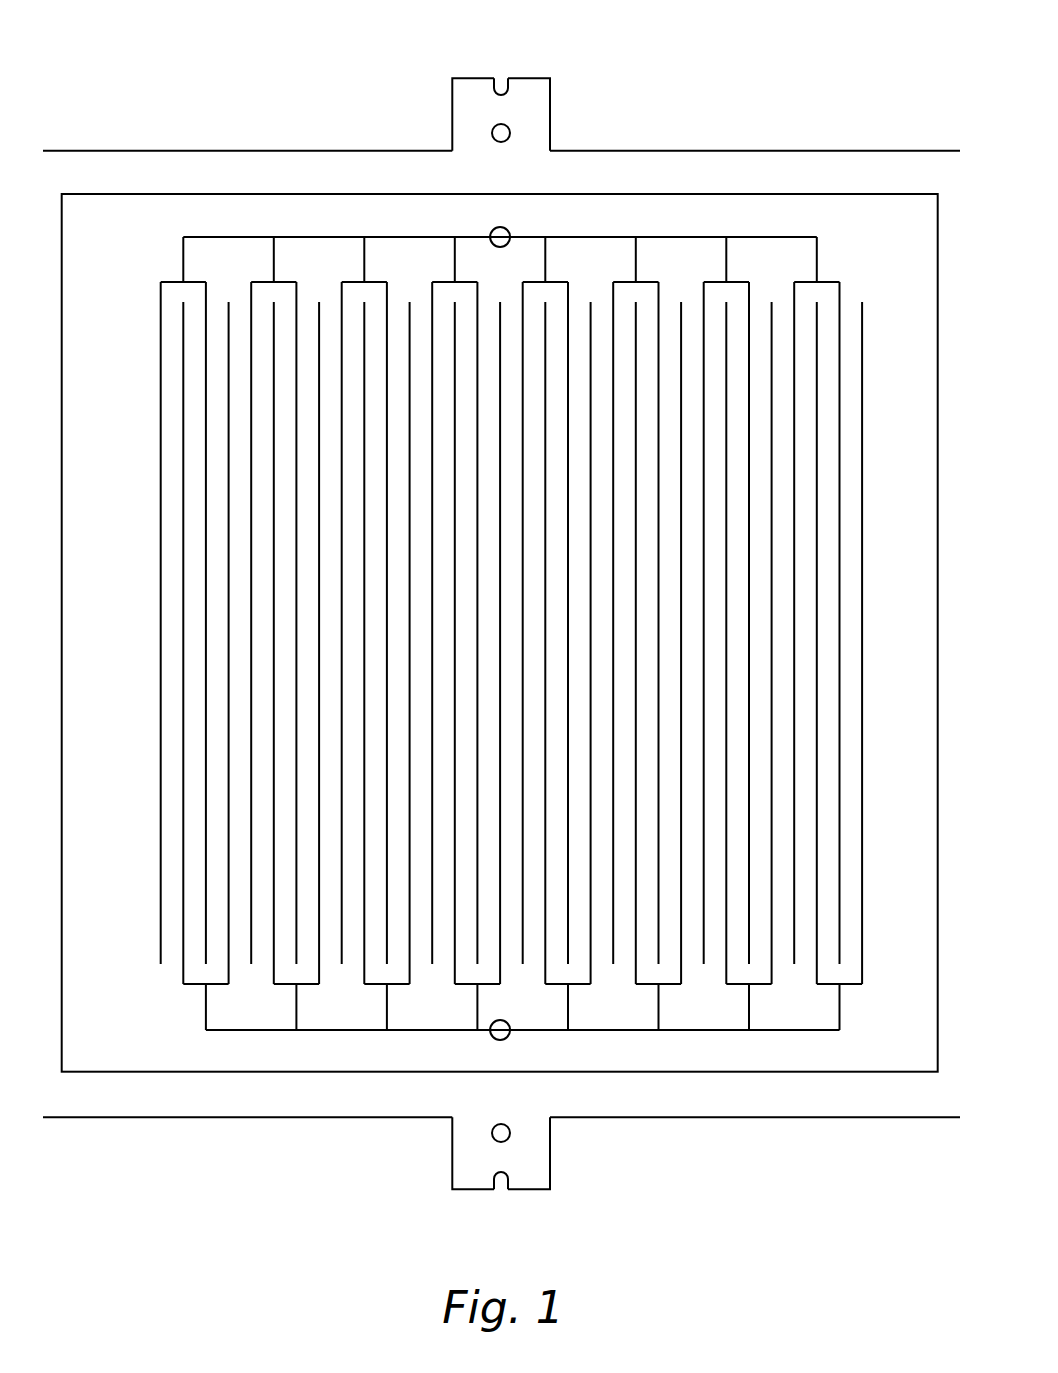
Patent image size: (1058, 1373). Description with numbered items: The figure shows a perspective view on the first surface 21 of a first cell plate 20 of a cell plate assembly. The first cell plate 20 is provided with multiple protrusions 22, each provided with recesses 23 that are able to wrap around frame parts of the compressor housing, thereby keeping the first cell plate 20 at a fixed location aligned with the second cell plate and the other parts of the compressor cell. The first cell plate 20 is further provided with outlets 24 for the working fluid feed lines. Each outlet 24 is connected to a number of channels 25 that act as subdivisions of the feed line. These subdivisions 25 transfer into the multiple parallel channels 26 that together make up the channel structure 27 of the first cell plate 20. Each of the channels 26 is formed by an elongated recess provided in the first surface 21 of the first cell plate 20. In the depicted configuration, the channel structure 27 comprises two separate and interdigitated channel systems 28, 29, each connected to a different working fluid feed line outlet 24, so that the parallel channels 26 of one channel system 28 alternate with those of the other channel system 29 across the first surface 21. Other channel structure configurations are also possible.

The first cell plate 20 is at (139, 95).
The first surface 21 is at (912, 242).
The protrusion 22 is at (463, 108).
The recess 23 is at (503, 76).
The outlet 24 is at (508, 230).
The channel 25 is at (271, 262).
The parallel channel 26 is at (842, 307).
The channel structure 27 is at (487, 642).
The channel system 28 is at (152, 250).
The channel system 29 is at (180, 1024).